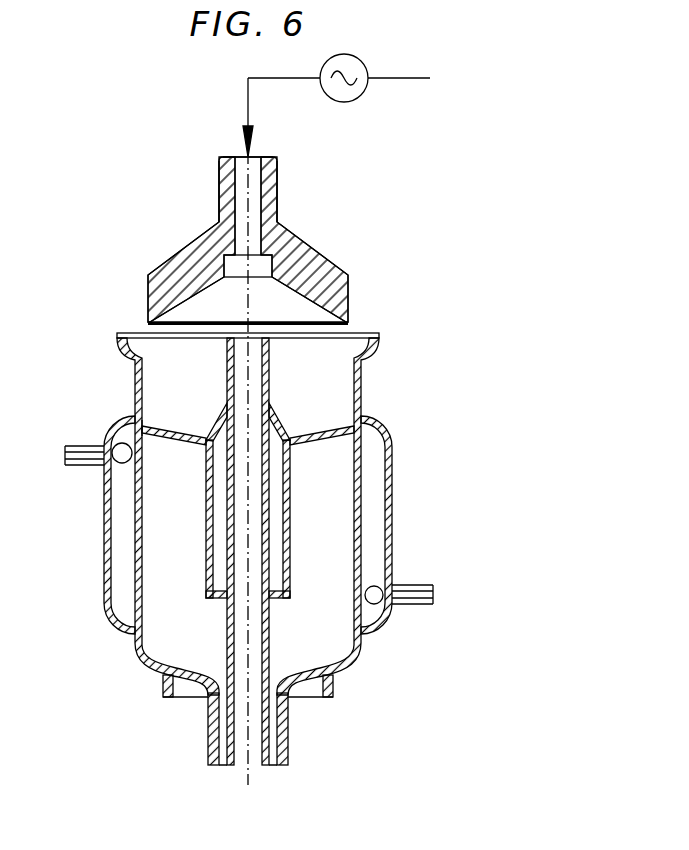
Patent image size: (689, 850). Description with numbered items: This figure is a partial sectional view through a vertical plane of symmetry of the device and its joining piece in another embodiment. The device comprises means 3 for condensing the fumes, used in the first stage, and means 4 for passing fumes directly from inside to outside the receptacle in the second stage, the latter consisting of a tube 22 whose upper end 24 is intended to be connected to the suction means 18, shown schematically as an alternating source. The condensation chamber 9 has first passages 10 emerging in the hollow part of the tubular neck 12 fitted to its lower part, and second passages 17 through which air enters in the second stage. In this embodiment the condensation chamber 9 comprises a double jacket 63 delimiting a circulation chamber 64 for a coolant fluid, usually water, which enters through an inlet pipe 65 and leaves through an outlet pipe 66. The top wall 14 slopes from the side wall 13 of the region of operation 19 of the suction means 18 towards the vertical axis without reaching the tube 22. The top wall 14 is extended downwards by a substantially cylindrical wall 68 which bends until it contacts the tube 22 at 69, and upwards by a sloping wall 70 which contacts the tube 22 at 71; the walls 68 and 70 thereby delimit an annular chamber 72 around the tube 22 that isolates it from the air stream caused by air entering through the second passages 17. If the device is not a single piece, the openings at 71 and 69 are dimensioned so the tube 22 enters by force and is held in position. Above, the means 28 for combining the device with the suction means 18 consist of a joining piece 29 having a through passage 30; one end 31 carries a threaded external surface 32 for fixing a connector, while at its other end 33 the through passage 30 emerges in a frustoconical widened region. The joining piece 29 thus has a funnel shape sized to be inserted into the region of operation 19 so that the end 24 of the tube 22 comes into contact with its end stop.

The means for condensing the fumes 3 is at (366, 513).
The means for passing fumes directly 4 is at (270, 722).
The condensation chamber 9 is at (140, 630).
The first passages 10 is at (224, 715).
The tubular neck 12 is at (286, 764).
The side wall 13 is at (361, 393).
The top wall 14 is at (142, 430).
The second passages 17 is at (203, 440).
The suction means 18 is at (397, 80).
The region of operation 19 is at (336, 343).
The tube 22 is at (227, 645).
The end of the tube 24 is at (196, 305).
The means for combining the device with the suction means 28 is at (352, 271).
The joining piece 29 is at (299, 258).
The through passage 30 is at (255, 202).
The end of the through passage 31 is at (258, 157).
The threaded external surface 32 is at (219, 176).
The other end of the through passage 33 is at (224, 267).
The double jacket 63 is at (104, 528).
The circulation chamber 64 is at (121, 568).
The inlet pipe 65 is at (412, 606).
The outlet pipe 66 is at (88, 446).
The substantially cylindrical wall 68 is at (290, 532).
The contact point of wall 68 with the tube 69 is at (281, 602).
The sloping wall 70 is at (290, 440).
The contact point of wall 70 with the tube 71 is at (270, 403).
The annular chamber 72 is at (220, 510).